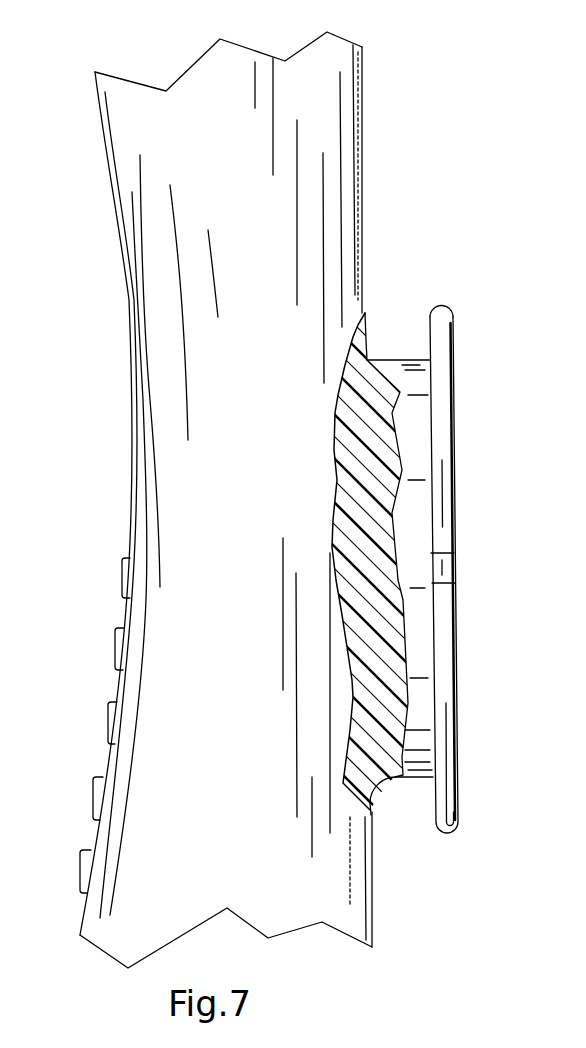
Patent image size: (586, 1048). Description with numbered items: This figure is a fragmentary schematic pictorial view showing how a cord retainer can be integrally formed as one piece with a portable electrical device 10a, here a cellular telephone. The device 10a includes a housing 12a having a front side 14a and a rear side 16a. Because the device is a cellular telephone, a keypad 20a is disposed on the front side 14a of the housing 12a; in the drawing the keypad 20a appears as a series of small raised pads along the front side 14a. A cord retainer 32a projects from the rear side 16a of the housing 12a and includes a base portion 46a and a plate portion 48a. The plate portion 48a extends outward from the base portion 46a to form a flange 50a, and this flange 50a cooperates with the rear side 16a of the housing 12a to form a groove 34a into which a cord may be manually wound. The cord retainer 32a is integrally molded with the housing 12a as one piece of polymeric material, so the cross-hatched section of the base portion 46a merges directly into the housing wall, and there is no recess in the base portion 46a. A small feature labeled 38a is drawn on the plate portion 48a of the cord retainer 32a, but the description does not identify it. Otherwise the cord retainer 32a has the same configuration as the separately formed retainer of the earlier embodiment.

The portable electrical device 10a is at (405, 80).
The housing 12a is at (328, 163).
The front side 14a is at (120, 255).
The rear side 16a is at (363, 205).
The keypad 20a is at (112, 707).
The cord retainer 32a is at (475, 442).
The groove 34a is at (402, 793).
The band 38a is at (447, 570).
The base portion 46a is at (413, 632).
The plate portion 48a is at (453, 350).
The flange 50a is at (431, 331).